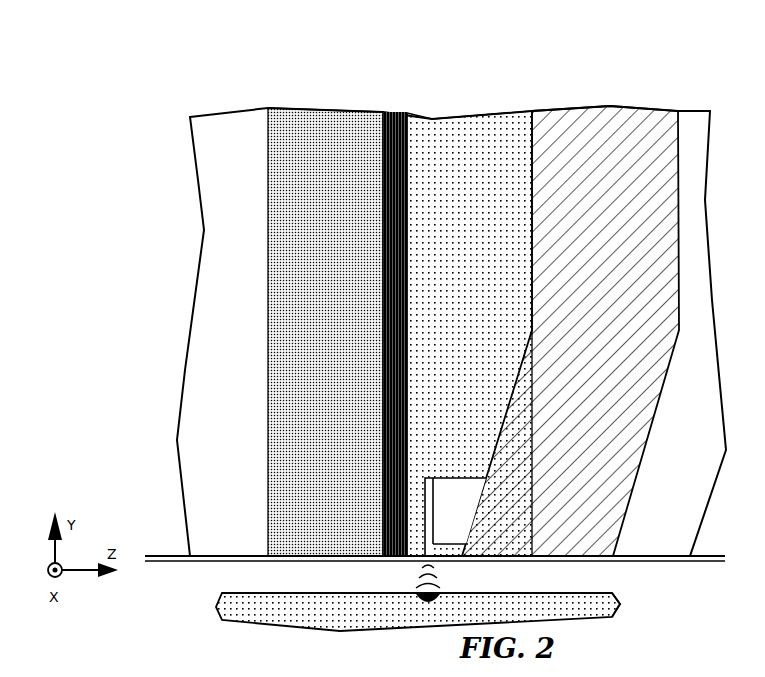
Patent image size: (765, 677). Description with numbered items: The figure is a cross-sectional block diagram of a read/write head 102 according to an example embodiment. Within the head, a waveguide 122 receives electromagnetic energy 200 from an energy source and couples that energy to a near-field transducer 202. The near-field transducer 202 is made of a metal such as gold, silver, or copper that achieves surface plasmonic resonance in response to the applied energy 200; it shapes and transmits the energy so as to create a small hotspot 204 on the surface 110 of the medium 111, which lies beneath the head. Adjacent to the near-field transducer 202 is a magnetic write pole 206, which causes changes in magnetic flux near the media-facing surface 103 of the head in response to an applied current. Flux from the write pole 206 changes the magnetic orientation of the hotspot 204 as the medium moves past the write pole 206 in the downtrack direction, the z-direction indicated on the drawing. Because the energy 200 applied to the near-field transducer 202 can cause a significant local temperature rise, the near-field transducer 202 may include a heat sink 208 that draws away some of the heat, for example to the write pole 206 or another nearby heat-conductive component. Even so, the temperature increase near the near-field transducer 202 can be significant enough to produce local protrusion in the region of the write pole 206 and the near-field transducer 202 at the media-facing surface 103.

The read/write head 102 is at (172, 84).
The waveguide 122 is at (400, 301).
The electromagnetic energy 200 is at (428, 231).
The magnetic write pole 206 is at (622, 111).
The near-field transducer 202 is at (427, 542).
The heat sink 208 is at (448, 536).
The media-facing surface 103 is at (653, 562).
The surface of medium 110 is at (573, 606).
The medium 111 is at (602, 606).
The hotspot 204 is at (428, 602).